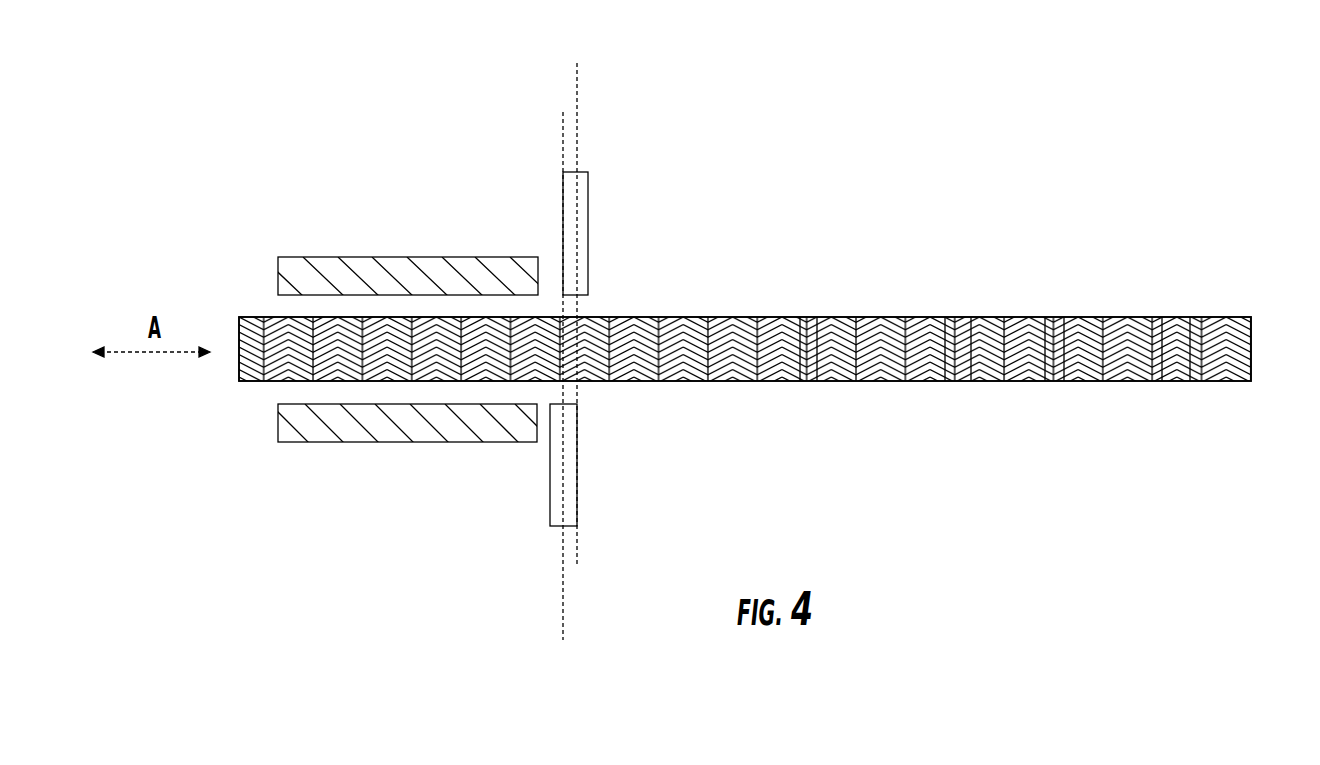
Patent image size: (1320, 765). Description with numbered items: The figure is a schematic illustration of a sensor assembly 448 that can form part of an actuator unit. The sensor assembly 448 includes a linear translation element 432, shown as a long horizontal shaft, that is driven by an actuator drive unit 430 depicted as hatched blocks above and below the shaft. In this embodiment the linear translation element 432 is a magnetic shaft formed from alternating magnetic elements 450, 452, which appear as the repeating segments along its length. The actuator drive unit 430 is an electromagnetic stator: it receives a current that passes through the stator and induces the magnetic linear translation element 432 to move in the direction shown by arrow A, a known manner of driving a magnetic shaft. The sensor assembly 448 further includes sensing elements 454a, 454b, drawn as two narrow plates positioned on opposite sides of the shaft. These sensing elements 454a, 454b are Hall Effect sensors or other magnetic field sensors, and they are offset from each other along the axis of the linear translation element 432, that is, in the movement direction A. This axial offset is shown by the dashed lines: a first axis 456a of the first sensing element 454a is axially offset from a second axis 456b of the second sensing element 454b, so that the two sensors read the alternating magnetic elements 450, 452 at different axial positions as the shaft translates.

The actuator drive unit 430 is at (405, 257).
The linear translation element 432 is at (1231, 393).
The sensor assembly 448 is at (771, 92).
The magnetic element 450 is at (797, 363).
The magnetic element 452 is at (816, 335).
The first sensing element 454a is at (550, 502).
The second sensing element 454b is at (588, 224).
The first axis 456a is at (562, 621).
The second axis 456b is at (578, 104).